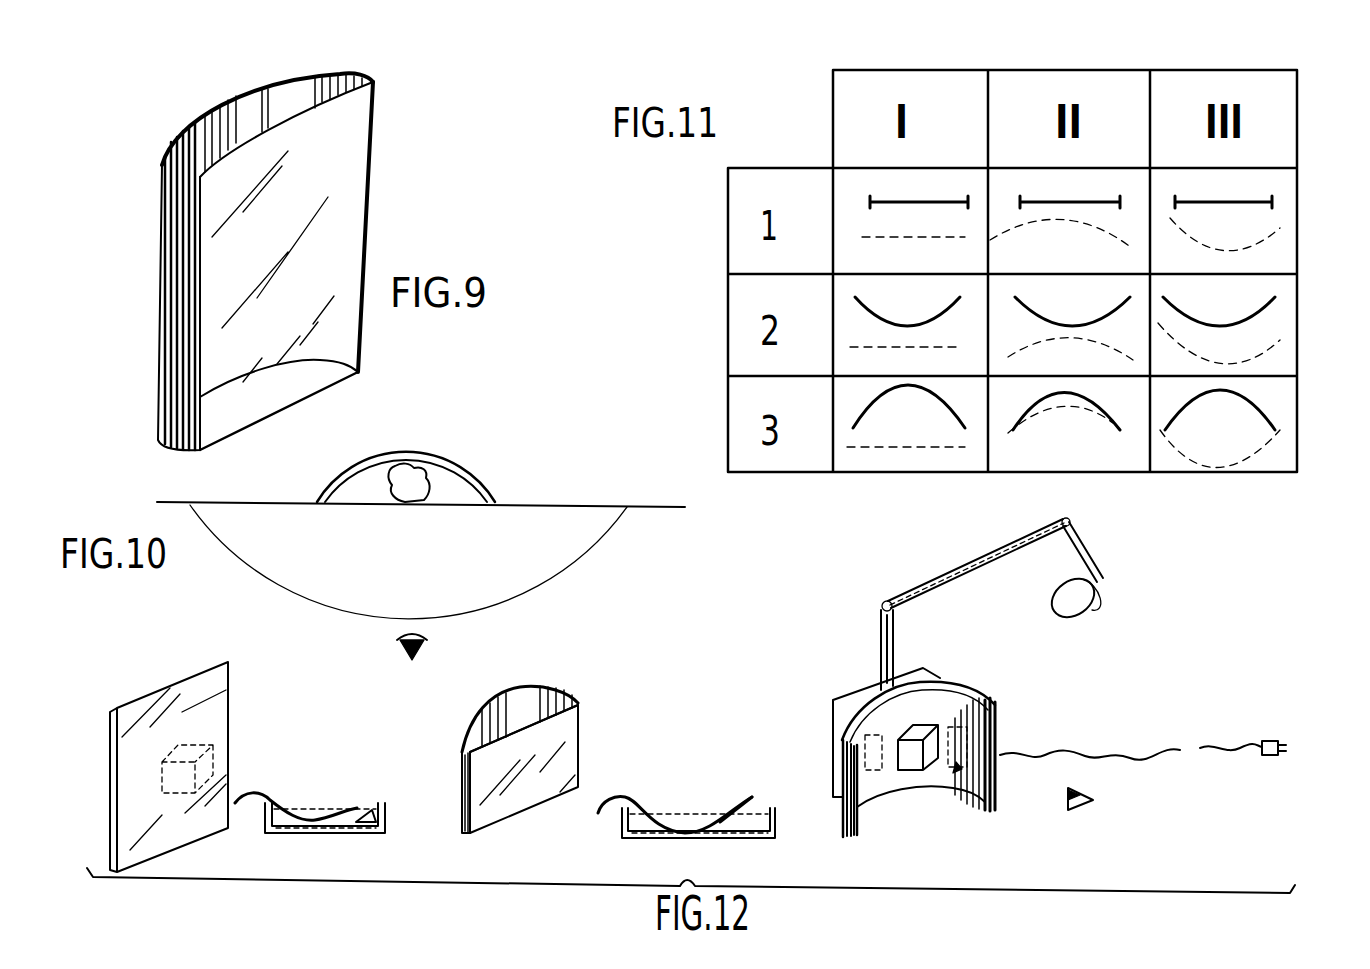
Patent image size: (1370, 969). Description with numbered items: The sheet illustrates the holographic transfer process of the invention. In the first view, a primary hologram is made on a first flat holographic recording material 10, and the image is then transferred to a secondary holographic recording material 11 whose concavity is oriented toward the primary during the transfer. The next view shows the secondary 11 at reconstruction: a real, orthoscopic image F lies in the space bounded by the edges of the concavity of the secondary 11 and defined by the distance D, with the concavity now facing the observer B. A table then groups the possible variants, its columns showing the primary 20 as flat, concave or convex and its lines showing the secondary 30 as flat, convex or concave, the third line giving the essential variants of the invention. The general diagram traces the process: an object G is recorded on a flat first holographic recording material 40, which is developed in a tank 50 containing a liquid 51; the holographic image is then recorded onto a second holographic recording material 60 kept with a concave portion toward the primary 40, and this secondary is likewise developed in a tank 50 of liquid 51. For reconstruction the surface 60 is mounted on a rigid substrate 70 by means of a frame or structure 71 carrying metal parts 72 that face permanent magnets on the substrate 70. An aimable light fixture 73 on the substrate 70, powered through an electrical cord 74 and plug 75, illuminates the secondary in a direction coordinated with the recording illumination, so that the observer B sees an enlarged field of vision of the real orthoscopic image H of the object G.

In FIG. 9, the first flat holographic recording material 10 is at (360, 142).
In FIG. 9, the secondary holographic recording material 11 is at (195, 128).
In FIG. 10, the secondary holographic recording material 11 is at (360, 466).
In FIG. 9, the distance D is at (320, 62).
In FIG. 10, the image F is at (428, 480).
In FIG. 10, the observer B is at (395, 648).
In FIG. 12, the observer B is at (1095, 820).
In FIG. 11, the primary 20 is at (860, 233).
In FIG. 11, the secondary 30 is at (881, 202).
In FIG. 12, the first holographic recording material 40 is at (222, 712).
In FIG. 12, the tank 50 is at (388, 815).
In FIG. 12, the liquid 51 is at (370, 806).
In FIG. 12, the second holographic recording material 60 is at (505, 703).
In FIG. 12, the substrate 70 is at (857, 698).
In FIG. 12, the structure 71 is at (975, 700).
In FIG. 12, the metal parts 72 is at (875, 770).
In FIG. 12, the light fixture 73 is at (1093, 595).
In FIG. 12, the electrical cord 74 is at (1118, 748).
In FIG. 12, the plug 75 is at (1270, 742).
In FIG. 12, the object G is at (215, 738).
In FIG. 12, the object H is at (935, 757).